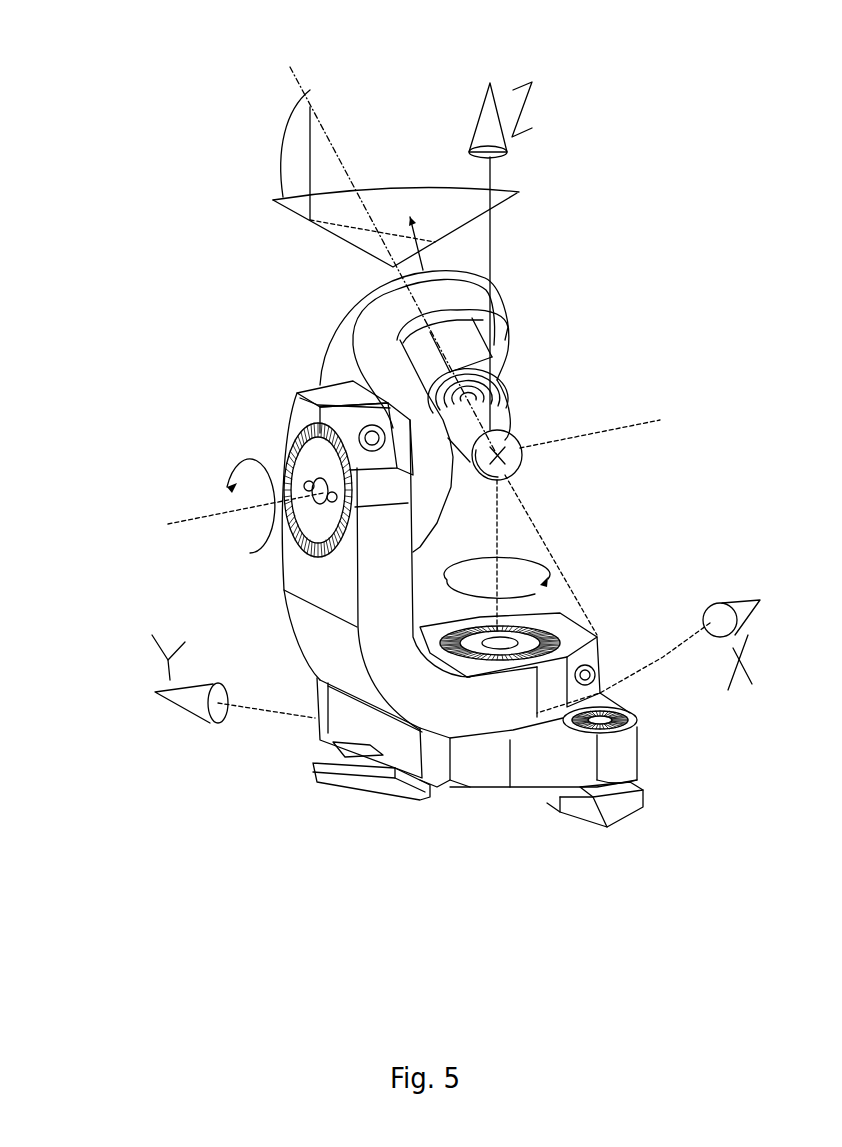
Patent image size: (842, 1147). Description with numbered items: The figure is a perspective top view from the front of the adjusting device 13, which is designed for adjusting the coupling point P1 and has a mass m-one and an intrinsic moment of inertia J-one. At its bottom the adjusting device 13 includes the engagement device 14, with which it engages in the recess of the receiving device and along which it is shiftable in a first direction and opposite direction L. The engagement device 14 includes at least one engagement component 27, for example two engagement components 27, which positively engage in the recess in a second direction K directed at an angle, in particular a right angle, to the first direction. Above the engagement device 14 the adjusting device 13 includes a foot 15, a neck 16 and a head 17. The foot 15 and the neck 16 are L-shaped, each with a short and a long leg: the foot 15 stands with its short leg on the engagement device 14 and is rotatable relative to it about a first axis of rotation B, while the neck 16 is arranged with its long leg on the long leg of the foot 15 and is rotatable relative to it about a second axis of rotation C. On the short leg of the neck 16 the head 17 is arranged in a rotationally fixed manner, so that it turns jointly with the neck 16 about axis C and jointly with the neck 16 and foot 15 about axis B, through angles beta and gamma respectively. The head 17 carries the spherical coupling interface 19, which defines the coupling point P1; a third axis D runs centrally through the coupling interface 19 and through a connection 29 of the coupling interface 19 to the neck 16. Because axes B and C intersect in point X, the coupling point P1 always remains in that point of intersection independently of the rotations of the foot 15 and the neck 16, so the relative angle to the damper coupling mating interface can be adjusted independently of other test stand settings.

The adjusting device 13 is at (138, 75).
The engagement device 14 is at (294, 820).
The foot 15 is at (250, 592).
The neck 16 is at (304, 334).
The head 17 is at (556, 382).
The coupling interface 19 is at (503, 458).
The engagement component 27 is at (478, 850).
The connection 29 is at (487, 410).
The coupling point P1 is at (497, 455).